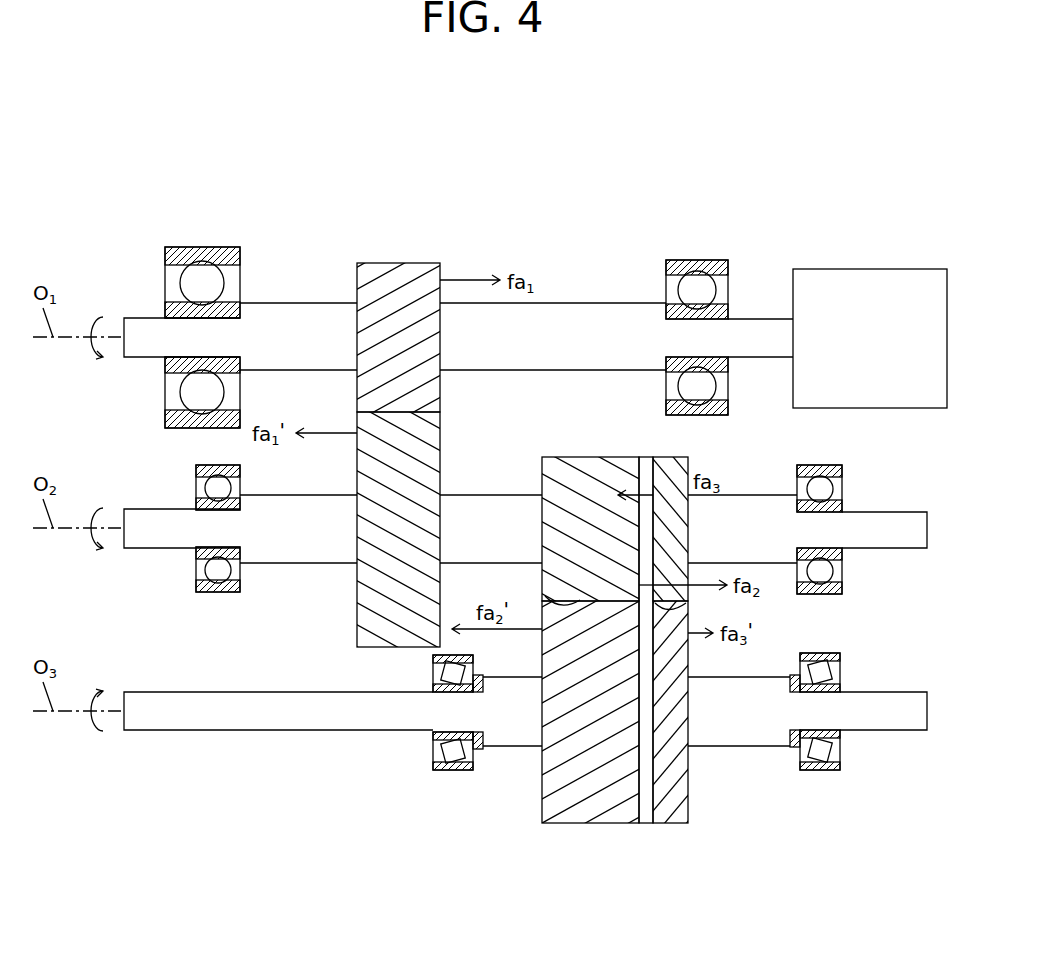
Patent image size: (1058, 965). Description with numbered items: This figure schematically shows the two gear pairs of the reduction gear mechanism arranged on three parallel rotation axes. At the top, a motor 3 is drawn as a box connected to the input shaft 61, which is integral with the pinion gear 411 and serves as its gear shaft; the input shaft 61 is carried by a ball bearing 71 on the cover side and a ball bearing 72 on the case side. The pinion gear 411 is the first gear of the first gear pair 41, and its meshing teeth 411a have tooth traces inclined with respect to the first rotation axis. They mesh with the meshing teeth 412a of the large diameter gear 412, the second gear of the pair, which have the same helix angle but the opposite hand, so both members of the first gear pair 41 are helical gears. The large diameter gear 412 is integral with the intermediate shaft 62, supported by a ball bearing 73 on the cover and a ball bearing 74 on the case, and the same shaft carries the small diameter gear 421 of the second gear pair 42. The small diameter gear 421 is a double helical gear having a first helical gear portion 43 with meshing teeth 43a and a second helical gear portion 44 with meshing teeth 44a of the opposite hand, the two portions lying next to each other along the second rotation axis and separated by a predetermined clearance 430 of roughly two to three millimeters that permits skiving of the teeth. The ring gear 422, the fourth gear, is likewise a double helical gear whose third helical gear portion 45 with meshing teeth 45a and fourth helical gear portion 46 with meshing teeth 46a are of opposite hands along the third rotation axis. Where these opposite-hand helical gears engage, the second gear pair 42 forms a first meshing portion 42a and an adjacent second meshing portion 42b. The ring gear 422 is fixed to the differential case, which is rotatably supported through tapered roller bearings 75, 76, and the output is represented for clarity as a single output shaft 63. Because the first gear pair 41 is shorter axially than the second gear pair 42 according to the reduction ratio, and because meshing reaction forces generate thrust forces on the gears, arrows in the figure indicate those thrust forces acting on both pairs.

The motor 3 is at (886, 268).
The first gear pair 41 is at (370, 423).
The pinion gear 411 is at (404, 335).
The meshing teeth 411a is at (415, 333).
The large diameter gear 412 is at (361, 527).
The meshing teeth 412a is at (368, 617).
The second gear pair 42 is at (621, 656).
The small diameter gear 421 is at (621, 517).
The ring gear 422 is at (617, 738).
The first meshing portion 42a is at (550, 600).
The second meshing portion 42b is at (683, 604).
The first helical gear portion 43 is at (556, 524).
The meshing teeth 43a is at (550, 535).
The second helical gear portion 44 is at (712, 520).
The meshing teeth 44a is at (680, 548).
The third helical gear portion 45 is at (559, 722).
The meshing teeth 45a is at (552, 805).
The fourth helical gear portion 46 is at (704, 723).
The meshing teeth 46a is at (680, 777).
The clearance 430 is at (645, 825).
The input shaft 61 is at (750, 318).
The intermediate shaft 62 is at (905, 510).
The output shaft 63 is at (890, 692).
The ball bearing 71 is at (205, 248).
The ball bearing 72 is at (697, 258).
The ball bearing 73 is at (197, 468).
The ball bearing 74 is at (845, 470).
The tapered roller bearing 75 is at (447, 771).
The tapered roller bearing 76 is at (842, 764).